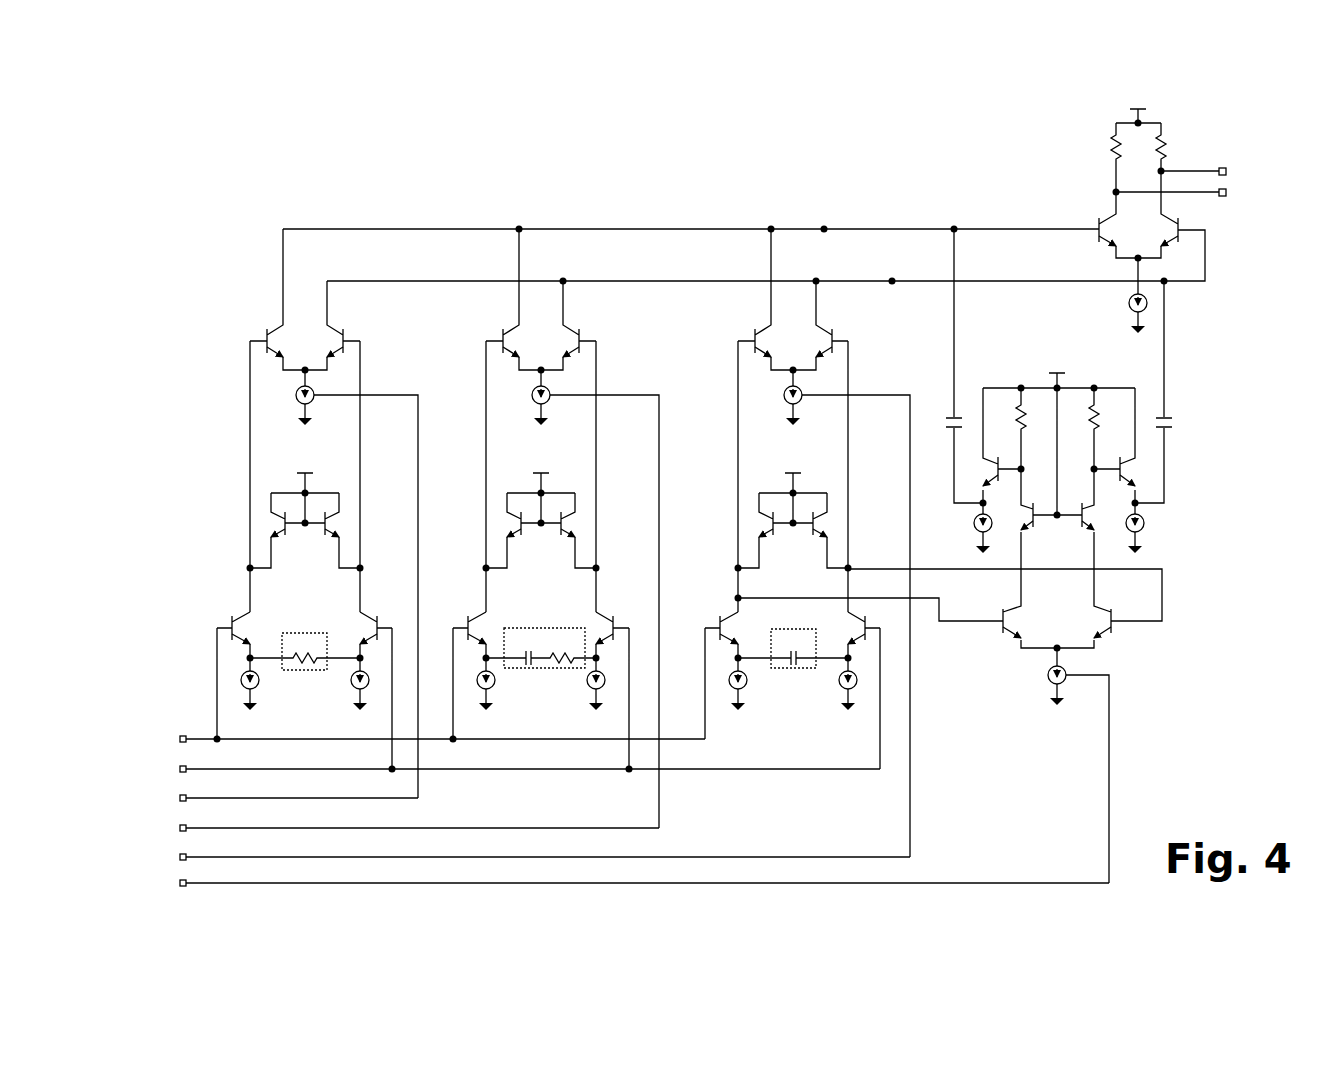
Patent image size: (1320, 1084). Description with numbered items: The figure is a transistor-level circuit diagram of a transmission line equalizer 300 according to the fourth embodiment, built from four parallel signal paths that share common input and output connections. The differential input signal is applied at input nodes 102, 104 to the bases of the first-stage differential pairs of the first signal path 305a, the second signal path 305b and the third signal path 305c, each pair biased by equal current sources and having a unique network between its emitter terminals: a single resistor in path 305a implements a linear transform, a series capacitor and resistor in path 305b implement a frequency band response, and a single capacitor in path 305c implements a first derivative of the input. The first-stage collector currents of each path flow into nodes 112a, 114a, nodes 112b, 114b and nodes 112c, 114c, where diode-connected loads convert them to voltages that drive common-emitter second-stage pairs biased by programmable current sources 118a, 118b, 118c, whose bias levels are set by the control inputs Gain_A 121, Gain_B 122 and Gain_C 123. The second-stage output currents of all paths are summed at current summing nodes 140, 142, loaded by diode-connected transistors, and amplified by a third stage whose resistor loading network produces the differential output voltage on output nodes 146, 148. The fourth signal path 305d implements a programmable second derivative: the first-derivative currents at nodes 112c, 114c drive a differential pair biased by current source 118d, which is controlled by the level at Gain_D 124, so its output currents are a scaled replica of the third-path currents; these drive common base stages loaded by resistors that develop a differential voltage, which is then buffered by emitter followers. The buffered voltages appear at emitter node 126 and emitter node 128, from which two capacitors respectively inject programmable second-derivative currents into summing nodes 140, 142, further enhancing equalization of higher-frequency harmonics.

The transmission line equalizer 300 is at (199, 153).
The first signal path 305a is at (365, 210).
The second signal path 305b is at (601, 210).
The third signal path 305c is at (852, 210).
The fourth signal path 305d is at (1178, 352).
The current summing node 140 is at (660, 229).
The current summing node 142 is at (660, 281).
The current source 118a is at (312, 400).
The current source 118b is at (548, 400).
The current source 118c is at (800, 400).
The current source 118d is at (1064, 680).
The node 112a is at (248, 569).
The node 112b is at (484, 569).
The node 112c is at (736, 569).
The node 114a is at (362, 570).
The node 114b is at (598, 570).
The node 114c is at (850, 568).
The input node 102 is at (185, 743).
The input node 104 is at (185, 773).
The Gain_A node 121 is at (185, 802).
The Gain_B node 122 is at (185, 832).
The Gain_C node 123 is at (185, 861).
The Gain_D node 124 is at (185, 887).
The emitter terminal node of transistor Q26 126 is at (985, 500).
The emitter terminal node of transistor Q25 128 is at (1133, 500).
The output node 146 is at (1226, 168).
The output node 148 is at (1223, 198).